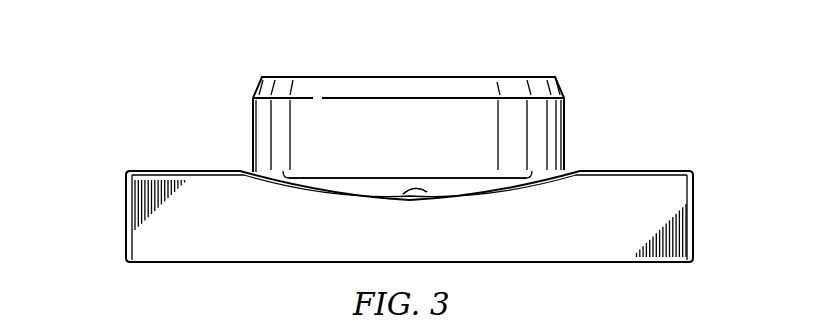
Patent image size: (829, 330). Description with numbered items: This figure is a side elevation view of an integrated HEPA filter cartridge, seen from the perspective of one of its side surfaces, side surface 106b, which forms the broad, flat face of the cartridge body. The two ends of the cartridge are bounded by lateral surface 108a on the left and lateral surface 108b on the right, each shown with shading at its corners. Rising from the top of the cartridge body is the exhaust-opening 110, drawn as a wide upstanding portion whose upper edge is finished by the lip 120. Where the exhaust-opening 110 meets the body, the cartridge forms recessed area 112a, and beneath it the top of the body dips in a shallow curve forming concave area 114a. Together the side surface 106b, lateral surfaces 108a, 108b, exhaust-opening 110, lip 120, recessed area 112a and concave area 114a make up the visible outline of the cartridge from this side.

The side surface 106b is at (258, 232).
The lateral surface 108a is at (126, 217).
The lateral surface 108b is at (694, 217).
The exhaust-opening 110 is at (566, 132).
The lip 120 is at (428, 89).
The recessed area 112a is at (357, 186).
The concave area 114a is at (422, 193).